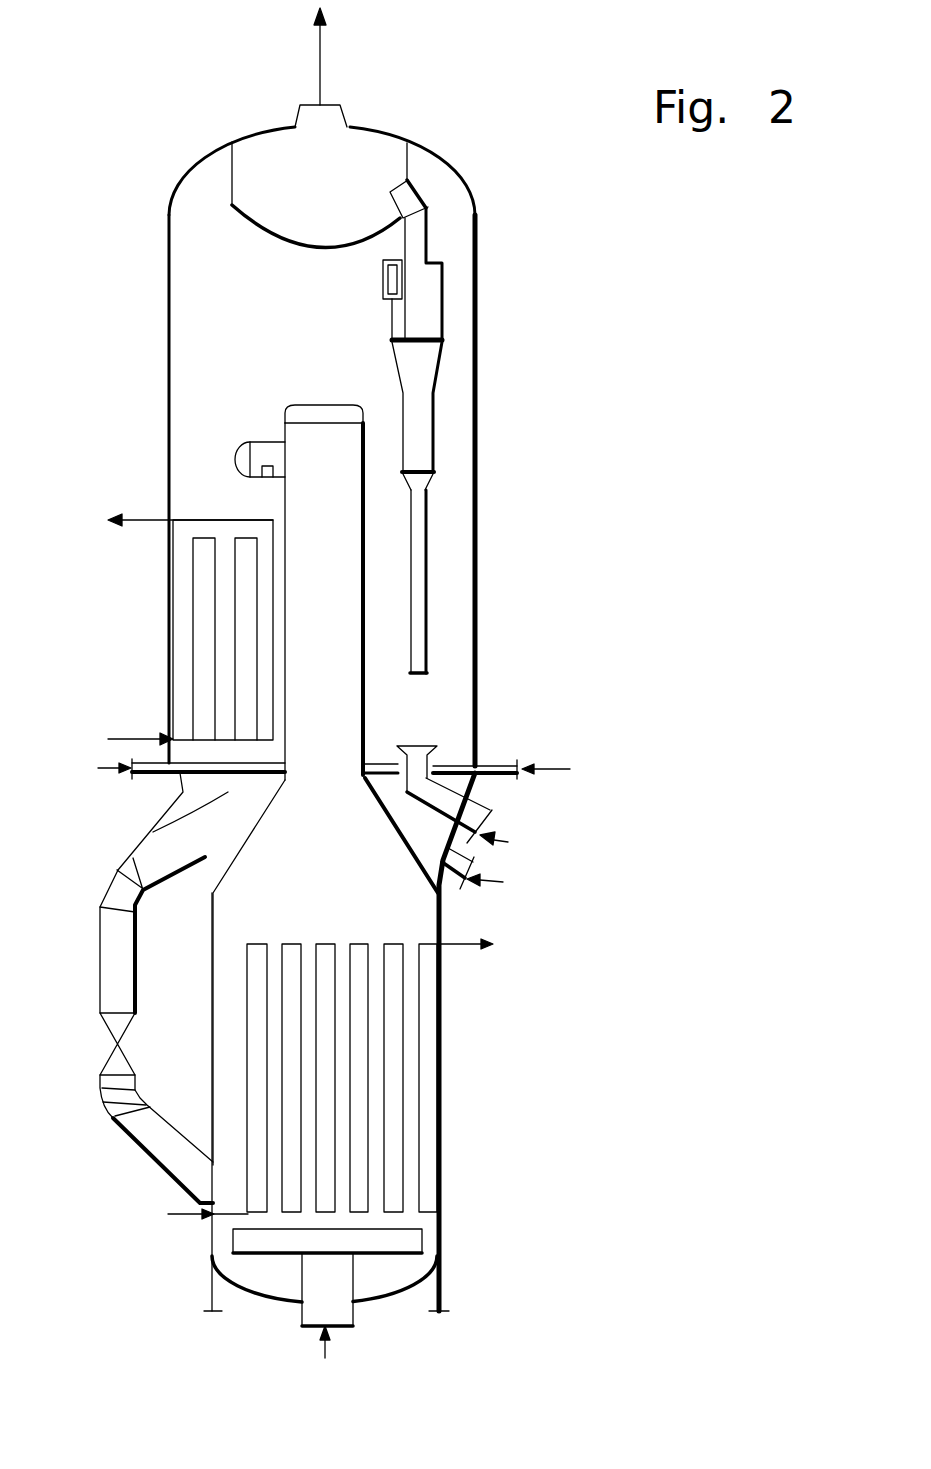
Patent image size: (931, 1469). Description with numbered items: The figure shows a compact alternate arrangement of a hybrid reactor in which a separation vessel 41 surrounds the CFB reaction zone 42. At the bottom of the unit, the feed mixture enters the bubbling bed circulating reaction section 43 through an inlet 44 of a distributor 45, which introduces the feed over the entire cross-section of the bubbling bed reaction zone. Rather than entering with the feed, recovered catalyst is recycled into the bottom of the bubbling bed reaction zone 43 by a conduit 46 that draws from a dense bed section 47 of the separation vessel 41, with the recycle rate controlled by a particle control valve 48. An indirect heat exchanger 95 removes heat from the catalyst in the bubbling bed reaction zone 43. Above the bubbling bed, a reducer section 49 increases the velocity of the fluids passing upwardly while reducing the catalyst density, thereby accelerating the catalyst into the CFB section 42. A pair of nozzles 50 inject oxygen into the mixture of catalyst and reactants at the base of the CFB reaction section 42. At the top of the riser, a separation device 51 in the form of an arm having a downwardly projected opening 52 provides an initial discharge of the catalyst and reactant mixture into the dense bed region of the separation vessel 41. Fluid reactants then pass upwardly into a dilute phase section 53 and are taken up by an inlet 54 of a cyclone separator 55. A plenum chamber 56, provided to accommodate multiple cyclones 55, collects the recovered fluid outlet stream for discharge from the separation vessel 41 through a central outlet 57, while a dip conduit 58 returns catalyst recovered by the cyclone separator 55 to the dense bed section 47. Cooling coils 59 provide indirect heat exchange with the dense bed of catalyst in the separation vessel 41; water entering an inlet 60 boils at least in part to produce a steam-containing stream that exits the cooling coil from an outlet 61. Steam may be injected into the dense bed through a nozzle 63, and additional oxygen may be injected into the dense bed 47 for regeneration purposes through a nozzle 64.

The separation vessel 41 is at (477, 427).
The CFB reaction zone 42 is at (366, 699).
The bubbling bed circulating reaction section 43 is at (422, 1128).
The inlet 44 is at (353, 1318).
The distributor 45 is at (410, 1240).
The conduit 46 is at (147, 1150).
The dense bed section 47 is at (155, 832).
The particle control valve 48 is at (108, 1057).
The reducer section 49 is at (392, 835).
The nozzles 50 is at (500, 766).
The separation device 51 is at (262, 442).
The downwardly projected opening 52 is at (262, 473).
The dilute phase section 53 is at (258, 327).
The inlet 54 is at (383, 274).
The cyclone separator 55 is at (435, 322).
The plenum chamber 56 is at (413, 158).
The central outlet 57 is at (346, 116).
The dip conduit 58 is at (428, 543).
The cooling coils 59 is at (193, 616).
The inlet 60 is at (127, 738).
The outlet 61 is at (145, 523).
The nozzle 63 is at (472, 814).
The nozzle 64 is at (447, 878).
The indirect heat exchanger 95 is at (422, 1035).